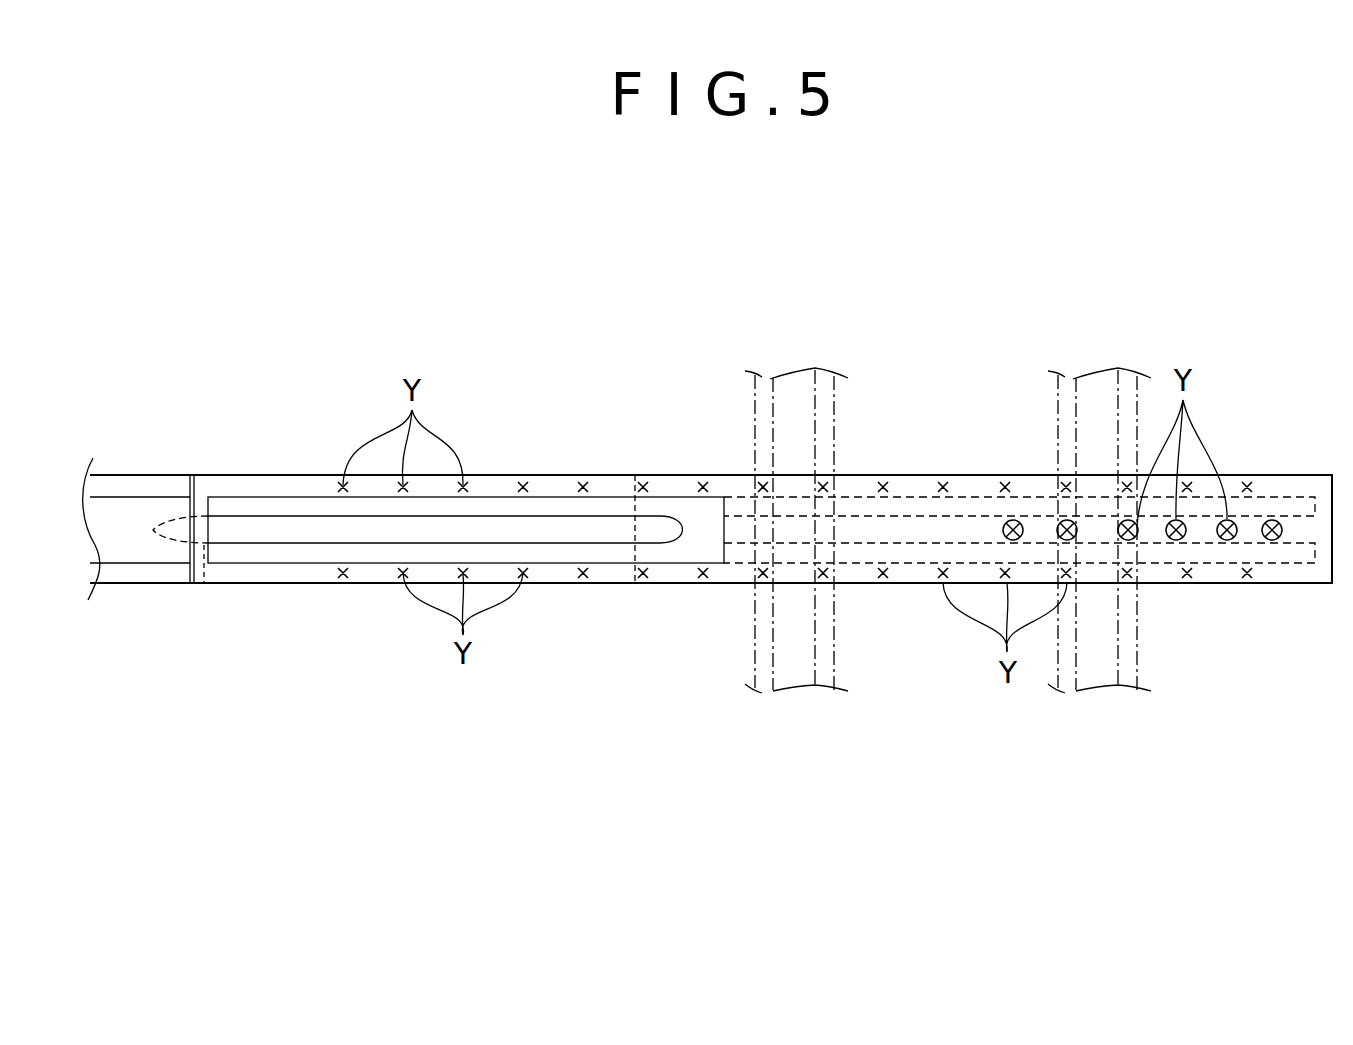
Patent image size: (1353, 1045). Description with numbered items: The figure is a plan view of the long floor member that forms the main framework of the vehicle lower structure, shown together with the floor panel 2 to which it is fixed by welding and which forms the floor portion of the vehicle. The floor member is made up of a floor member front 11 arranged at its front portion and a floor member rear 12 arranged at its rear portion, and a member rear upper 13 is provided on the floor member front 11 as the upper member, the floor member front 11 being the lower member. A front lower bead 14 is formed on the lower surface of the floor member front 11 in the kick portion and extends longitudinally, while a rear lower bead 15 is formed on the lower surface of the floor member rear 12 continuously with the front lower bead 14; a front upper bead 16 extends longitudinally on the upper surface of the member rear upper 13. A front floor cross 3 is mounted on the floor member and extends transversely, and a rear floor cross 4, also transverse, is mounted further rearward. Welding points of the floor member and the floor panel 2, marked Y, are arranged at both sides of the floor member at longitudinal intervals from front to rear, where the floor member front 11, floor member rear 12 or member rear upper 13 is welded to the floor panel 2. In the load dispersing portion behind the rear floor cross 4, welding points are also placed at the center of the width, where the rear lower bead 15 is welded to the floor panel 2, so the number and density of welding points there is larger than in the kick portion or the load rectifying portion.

The floor panel 2 is at (932, 455).
The front floor cross 3 is at (827, 635).
The rear floor cross 4 is at (1130, 647).
The floor member front 11 is at (137, 485).
The floor member rear 12 is at (1292, 485).
The member rear upper 13 is at (250, 480).
The front lower bead 14 is at (204, 585).
The rear lower bead 15 is at (1282, 552).
The front upper bead 16 is at (325, 540).